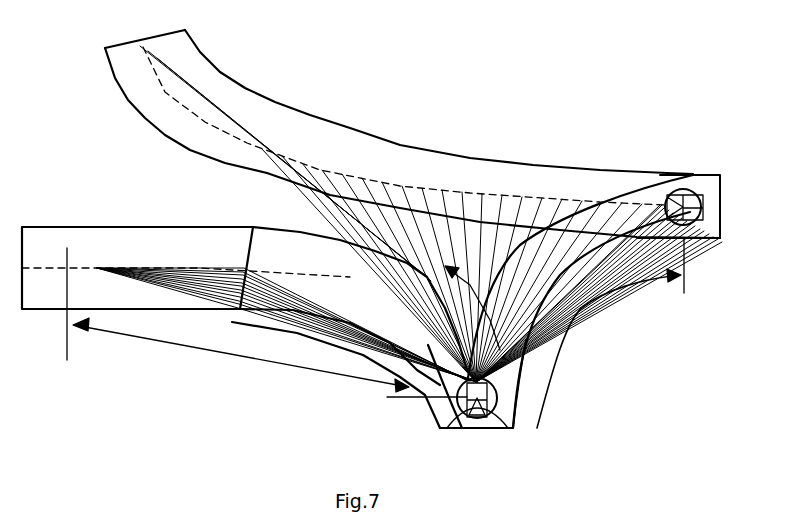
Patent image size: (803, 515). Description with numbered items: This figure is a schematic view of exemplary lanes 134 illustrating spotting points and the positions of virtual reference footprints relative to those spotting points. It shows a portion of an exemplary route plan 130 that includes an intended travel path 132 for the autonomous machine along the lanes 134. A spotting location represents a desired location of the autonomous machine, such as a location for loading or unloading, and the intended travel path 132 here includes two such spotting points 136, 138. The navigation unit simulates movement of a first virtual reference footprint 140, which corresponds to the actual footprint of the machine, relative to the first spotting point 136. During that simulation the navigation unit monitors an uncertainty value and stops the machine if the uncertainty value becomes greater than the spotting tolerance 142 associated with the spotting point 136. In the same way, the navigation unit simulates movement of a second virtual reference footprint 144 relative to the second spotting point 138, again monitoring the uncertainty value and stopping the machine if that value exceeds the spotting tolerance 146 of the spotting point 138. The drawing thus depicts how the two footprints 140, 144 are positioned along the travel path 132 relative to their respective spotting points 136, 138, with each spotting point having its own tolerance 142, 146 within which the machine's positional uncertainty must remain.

The route plan 130 is at (636, 102).
The intended travel path 132 is at (426, 184).
The lanes 134 is at (312, 137).
The spotting point 136 is at (512, 428).
The spotting point 138 is at (675, 191).
The first virtual reference footprint 140 is at (438, 428).
The spotting tolerance 142 is at (478, 420).
The second virtual reference footprint 144 is at (693, 188).
The spotting tolerance 146 is at (705, 240).